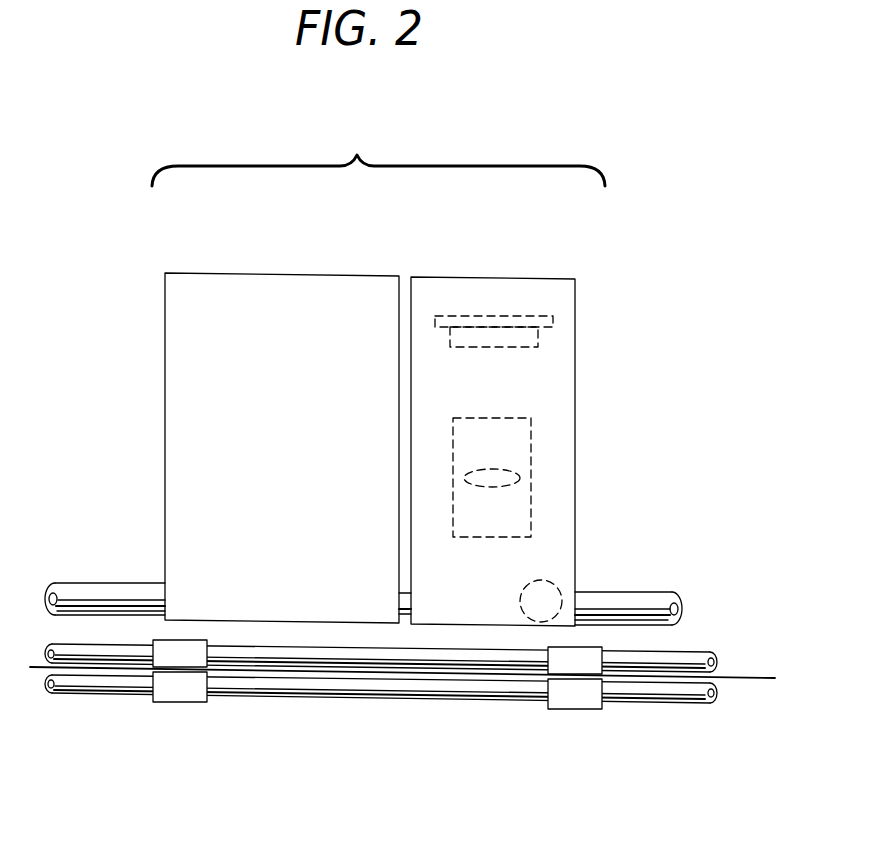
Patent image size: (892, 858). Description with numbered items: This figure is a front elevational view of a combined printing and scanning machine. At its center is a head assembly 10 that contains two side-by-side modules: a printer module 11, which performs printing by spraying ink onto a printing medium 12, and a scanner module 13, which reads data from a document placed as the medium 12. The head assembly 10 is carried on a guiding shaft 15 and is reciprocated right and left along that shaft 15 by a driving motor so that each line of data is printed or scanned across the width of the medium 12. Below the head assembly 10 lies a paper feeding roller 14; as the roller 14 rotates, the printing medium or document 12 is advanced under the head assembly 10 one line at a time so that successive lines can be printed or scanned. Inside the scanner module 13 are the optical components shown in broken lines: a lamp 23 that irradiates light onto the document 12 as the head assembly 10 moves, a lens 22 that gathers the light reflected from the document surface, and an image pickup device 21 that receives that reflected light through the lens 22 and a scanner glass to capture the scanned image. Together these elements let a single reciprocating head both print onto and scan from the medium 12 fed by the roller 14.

The head assembly 10 is at (378, 153).
The printer module 11 is at (283, 273).
The printing medium 12 is at (740, 677).
The scanner module 13 is at (498, 278).
The paper feeding roller 14 is at (654, 705).
The guiding shaft 15 is at (105, 583).
The image pickup device 21 is at (517, 316).
The lens 22 is at (532, 453).
The lamp 23 is at (550, 583).